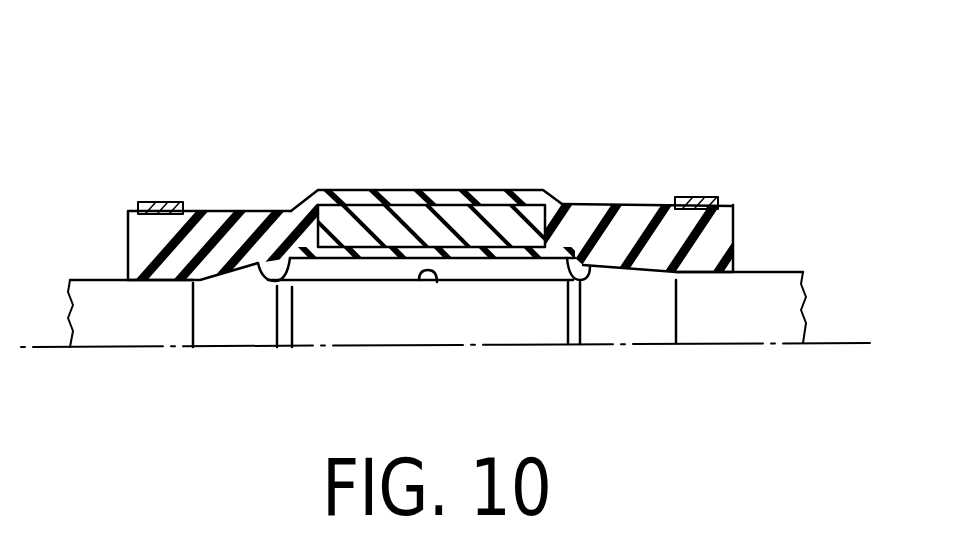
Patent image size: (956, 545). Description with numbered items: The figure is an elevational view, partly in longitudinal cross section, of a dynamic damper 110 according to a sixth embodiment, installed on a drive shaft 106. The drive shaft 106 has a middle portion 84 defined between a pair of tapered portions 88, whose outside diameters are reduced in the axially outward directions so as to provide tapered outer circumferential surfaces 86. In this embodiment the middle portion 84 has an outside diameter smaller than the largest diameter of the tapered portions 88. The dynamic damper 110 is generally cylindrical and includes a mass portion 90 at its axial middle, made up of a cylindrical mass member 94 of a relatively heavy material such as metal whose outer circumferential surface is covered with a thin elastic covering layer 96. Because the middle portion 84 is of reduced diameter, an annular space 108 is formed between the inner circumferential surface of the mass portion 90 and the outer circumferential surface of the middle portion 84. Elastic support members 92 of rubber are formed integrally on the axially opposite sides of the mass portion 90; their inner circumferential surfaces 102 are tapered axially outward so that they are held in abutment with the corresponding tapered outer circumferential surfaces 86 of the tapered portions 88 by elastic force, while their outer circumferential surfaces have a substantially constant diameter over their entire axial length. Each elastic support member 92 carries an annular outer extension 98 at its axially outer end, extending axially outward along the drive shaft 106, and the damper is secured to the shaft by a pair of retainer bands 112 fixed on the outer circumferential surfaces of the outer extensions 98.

The middle portion 84 is at (363, 330).
The tapered outer circumferential surfaces 86 is at (235, 258).
The tapered portions 88 is at (250, 332).
The mass portion 90 is at (388, 155).
The elastic support members 92 is at (253, 210).
The mass member 94 is at (448, 215).
The elastic covering layer 96 is at (503, 190).
The outer extensions 98 is at (145, 254).
The inner circumferential surfaces 102 is at (217, 280).
The drive shaft 106 is at (797, 234).
The annular space 108 is at (437, 282).
The dynamic damper 110 is at (567, 120).
The retainer bands 112 is at (157, 203).